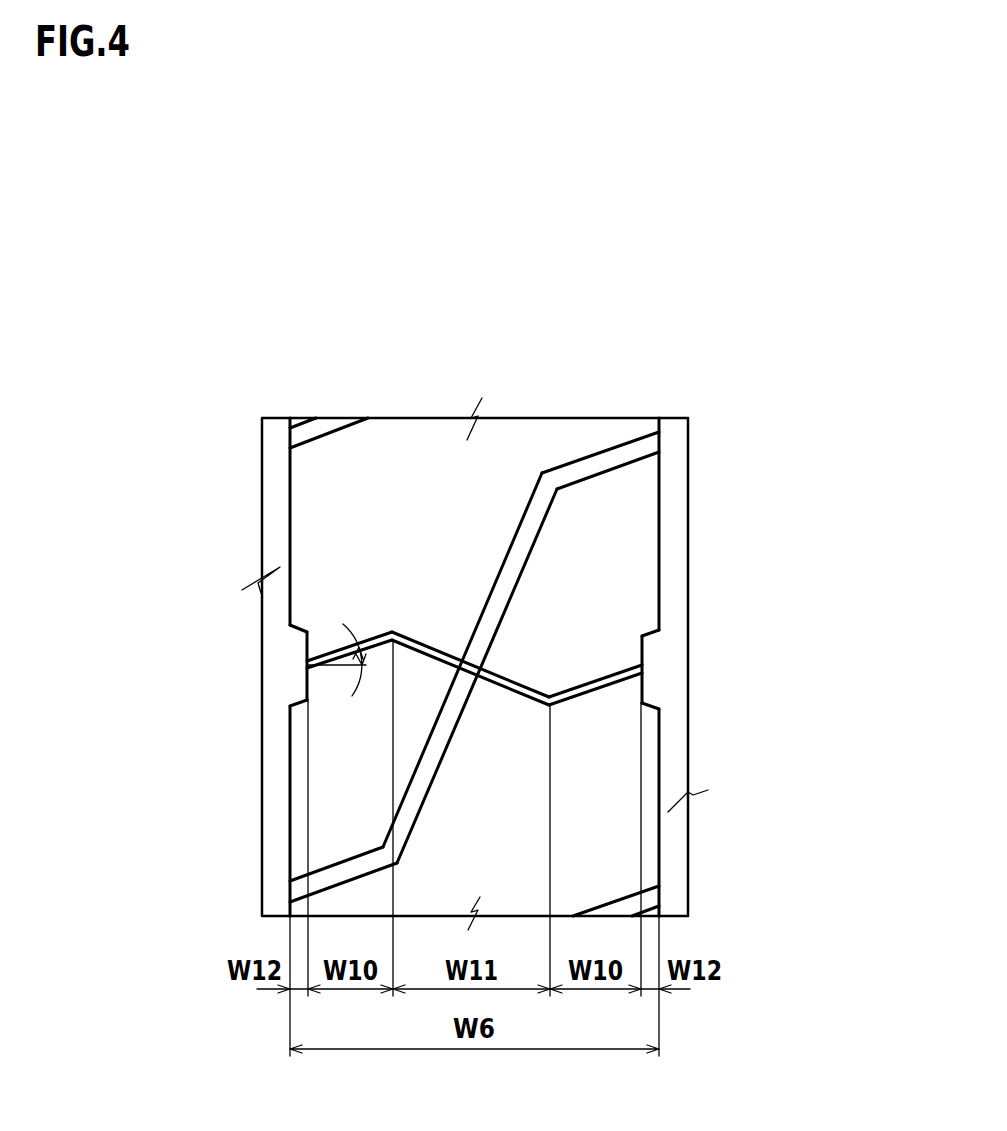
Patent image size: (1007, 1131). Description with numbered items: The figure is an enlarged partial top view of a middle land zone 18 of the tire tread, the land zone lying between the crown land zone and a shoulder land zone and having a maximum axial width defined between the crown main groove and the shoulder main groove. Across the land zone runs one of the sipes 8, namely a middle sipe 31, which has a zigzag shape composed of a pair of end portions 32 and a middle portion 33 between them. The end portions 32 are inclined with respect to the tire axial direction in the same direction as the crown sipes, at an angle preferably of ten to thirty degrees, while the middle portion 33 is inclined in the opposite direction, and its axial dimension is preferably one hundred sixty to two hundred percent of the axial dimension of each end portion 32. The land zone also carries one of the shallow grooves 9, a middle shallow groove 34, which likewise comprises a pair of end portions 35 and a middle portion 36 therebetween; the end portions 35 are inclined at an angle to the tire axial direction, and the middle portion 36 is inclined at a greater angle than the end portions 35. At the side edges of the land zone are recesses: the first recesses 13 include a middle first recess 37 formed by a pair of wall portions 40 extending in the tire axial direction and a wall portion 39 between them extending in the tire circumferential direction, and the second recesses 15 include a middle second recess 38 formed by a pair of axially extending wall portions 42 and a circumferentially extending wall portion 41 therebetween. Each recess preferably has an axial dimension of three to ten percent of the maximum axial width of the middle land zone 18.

The middle land zone 18 is at (532, 437).
The shallow grooves 9 is at (156, 667).
The middle shallow groove 34 is at (156, 667).
The first recesses 13 is at (212, 664).
The middle first recess 37 is at (212, 664).
The wall portions 40 is at (300, 633).
The wall portion 39 is at (309, 684).
The second recesses 15 is at (740, 667).
The middle second recess 38 is at (740, 667).
The wall portions 42 is at (648, 633).
The wall portion 41 is at (643, 686).
The sipes 8 is at (563, 580).
The middle sipe 31 is at (563, 580).
The end portions 32 is at (394, 632).
The middle portion 33 is at (520, 688).
The end portions 35 is at (588, 468).
The middle portion 36 is at (528, 528).